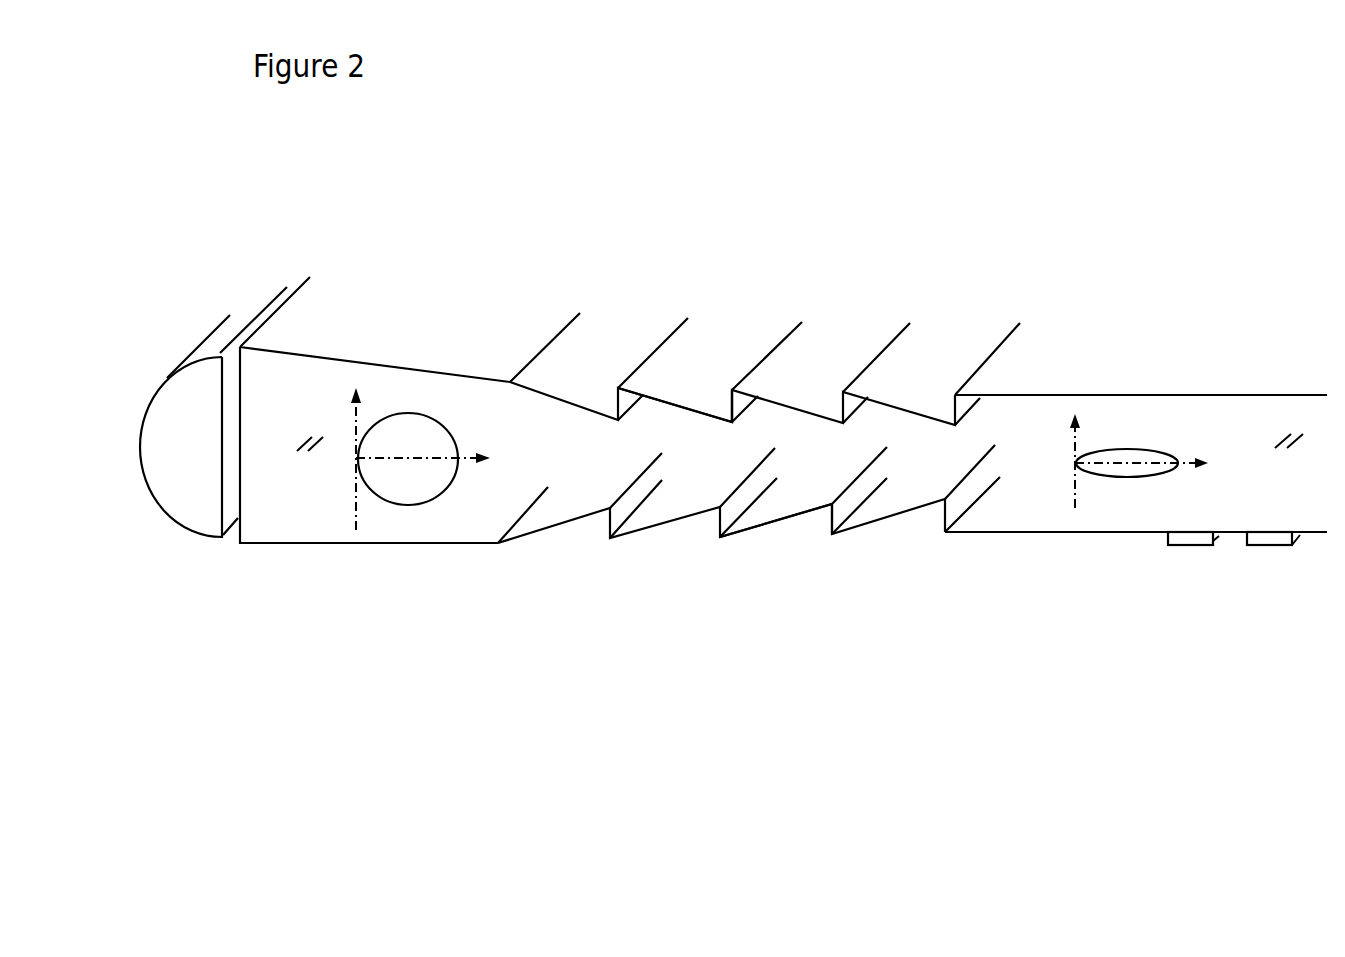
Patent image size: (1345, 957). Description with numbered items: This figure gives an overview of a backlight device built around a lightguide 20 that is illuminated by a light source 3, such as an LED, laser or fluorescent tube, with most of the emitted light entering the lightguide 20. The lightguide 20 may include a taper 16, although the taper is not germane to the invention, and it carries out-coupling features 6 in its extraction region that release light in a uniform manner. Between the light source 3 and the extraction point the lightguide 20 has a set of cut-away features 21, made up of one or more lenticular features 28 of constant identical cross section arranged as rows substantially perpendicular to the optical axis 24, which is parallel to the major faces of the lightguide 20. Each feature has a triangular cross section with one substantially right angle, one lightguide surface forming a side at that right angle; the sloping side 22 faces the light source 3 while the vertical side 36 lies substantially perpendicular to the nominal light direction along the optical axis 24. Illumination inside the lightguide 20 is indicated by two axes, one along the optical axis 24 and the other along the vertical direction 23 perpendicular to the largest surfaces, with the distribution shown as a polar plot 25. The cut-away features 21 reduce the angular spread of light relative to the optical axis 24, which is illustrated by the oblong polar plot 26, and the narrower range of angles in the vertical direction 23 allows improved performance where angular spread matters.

The light source 3 is at (228, 337).
The taper 16 is at (375, 348).
The sloping side 22 is at (703, 370).
The lightguide 20 is at (1025, 413).
The optical axis 24 is at (472, 465).
The vertical side 36 is at (734, 402).
The vertical direction 23 is at (353, 512).
The polar plot 25 is at (408, 507).
The lenticular features 28 is at (832, 565).
The cut-away features 21 is at (513, 640).
The oblong polar plot 26 is at (1140, 480).
The out-coupling features 6 is at (1255, 547).